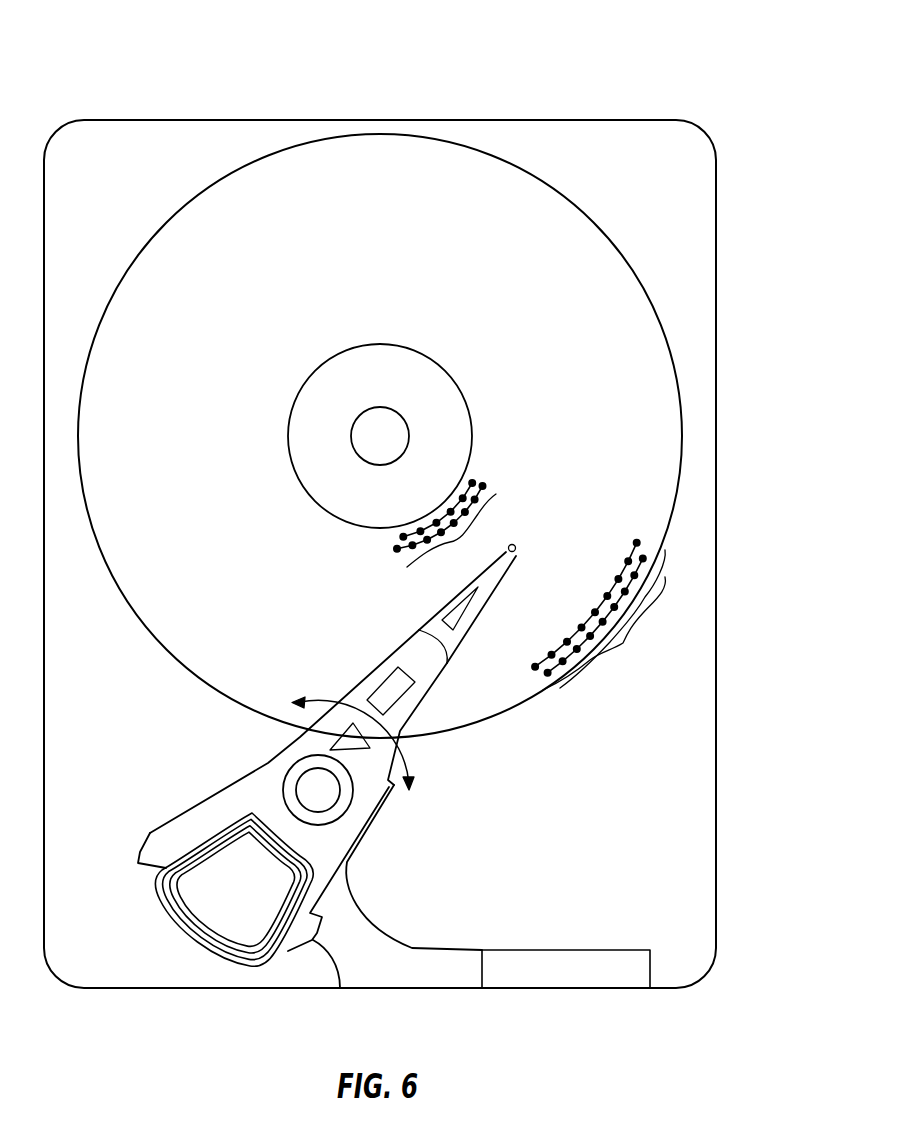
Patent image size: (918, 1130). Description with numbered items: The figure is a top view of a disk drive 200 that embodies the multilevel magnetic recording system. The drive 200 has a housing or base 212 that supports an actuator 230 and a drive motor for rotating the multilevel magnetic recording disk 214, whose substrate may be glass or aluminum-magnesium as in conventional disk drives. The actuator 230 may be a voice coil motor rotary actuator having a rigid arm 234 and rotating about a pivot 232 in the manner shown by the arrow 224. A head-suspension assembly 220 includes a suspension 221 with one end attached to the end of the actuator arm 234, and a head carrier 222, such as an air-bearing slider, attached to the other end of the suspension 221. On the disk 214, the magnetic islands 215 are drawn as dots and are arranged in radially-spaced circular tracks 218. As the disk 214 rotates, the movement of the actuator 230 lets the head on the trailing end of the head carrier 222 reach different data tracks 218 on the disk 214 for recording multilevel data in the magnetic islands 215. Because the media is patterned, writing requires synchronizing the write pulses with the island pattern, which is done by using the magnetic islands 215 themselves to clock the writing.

The drive 200 is at (660, 81).
The housing or base 212 is at (717, 222).
The multilevel magnetic recording disk 214 is at (166, 243).
The magnetic islands 215 is at (456, 545).
The circular tracks 218 is at (386, 534).
The head-suspension assembly 220 is at (519, 553).
The suspension 221 is at (431, 623).
The head carrier 222 is at (514, 543).
The arrow 224 is at (405, 768).
The actuator 230 is at (146, 852).
The pivot 232 is at (305, 790).
The rigid arm 234 is at (358, 693).